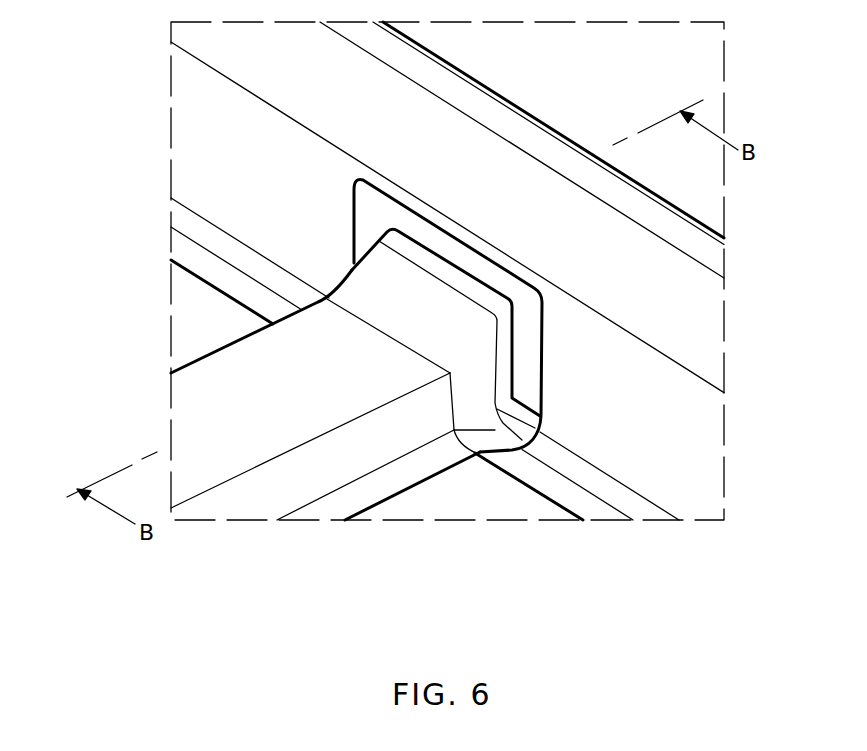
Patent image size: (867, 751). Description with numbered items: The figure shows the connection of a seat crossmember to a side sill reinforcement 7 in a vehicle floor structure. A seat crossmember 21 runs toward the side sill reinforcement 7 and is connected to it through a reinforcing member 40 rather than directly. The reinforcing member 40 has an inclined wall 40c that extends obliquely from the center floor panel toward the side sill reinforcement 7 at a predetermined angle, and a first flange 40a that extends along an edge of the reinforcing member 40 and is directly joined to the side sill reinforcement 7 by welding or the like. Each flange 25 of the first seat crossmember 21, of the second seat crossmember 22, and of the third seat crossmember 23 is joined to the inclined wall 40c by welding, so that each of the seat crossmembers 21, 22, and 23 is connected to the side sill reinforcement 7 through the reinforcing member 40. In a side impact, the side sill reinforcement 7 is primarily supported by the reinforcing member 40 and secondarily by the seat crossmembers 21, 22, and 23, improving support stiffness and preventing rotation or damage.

The side sill reinforcement 7 is at (670, 238).
The flange 25 is at (463, 317).
The first seat crossmember 21 is at (336, 420).
The second seat crossmember 22 is at (387, 447).
The third seat crossmember 23 is at (387, 447).
The reinforcing member 40 is at (476, 251).
The first flange 40a is at (482, 263).
The inclined wall 40c is at (442, 263).